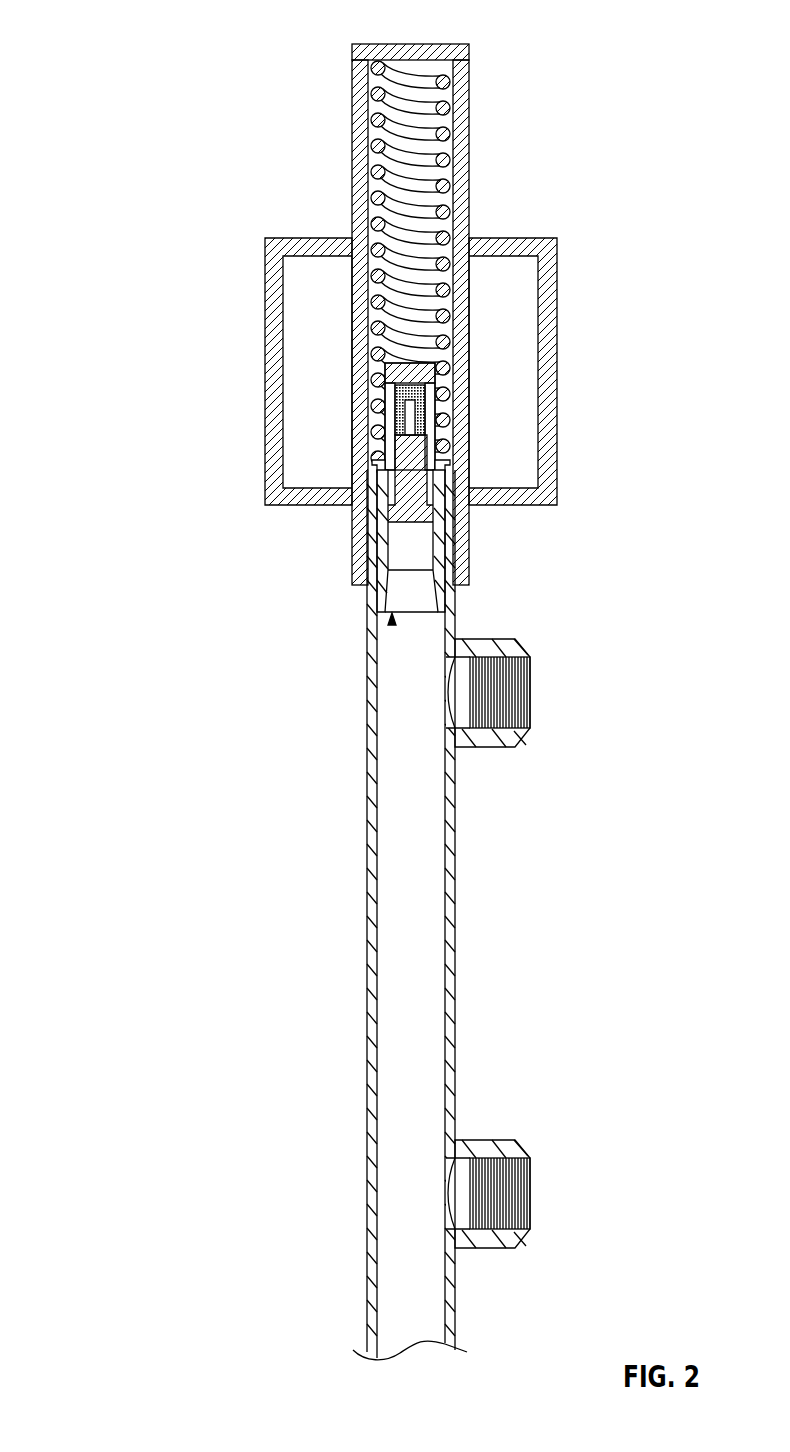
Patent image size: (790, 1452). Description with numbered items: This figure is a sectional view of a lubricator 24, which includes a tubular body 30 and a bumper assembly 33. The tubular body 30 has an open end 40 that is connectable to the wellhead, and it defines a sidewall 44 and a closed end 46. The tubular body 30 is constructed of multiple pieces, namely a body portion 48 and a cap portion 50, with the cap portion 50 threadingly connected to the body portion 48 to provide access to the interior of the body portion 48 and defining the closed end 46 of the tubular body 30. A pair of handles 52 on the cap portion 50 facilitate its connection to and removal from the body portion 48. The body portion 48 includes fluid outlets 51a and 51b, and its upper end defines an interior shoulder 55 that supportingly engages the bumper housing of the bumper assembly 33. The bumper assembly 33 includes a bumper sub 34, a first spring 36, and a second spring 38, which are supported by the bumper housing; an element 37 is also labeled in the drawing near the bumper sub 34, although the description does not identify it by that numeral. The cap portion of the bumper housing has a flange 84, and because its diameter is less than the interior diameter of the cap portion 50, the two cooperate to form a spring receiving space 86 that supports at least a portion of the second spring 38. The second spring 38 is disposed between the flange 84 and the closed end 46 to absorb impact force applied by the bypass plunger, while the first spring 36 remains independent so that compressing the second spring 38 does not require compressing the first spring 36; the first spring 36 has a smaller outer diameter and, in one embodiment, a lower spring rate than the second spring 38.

The lubricator 24 is at (108, 64).
The tubular body 30 is at (355, 90).
The bumper assembly 33 is at (392, 622).
The bumper sub 34 is at (418, 497).
The first spring 36 is at (425, 414).
The nozzle sleeve 37 is at (383, 553).
The second spring 38 is at (370, 148).
The open end 40 is at (367, 1322).
The sidewall 44 is at (367, 777).
The closed end 46 is at (418, 44).
The body portion 48 is at (456, 1012).
The cap portion 50 is at (470, 193).
The fluid outlet 51a is at (522, 743).
The fluid outlet 51b is at (522, 1243).
The handles 52 is at (265, 372).
The interior shoulder 55 is at (385, 482).
The flange 84 is at (440, 478).
The spring receiving space 86 is at (372, 432).